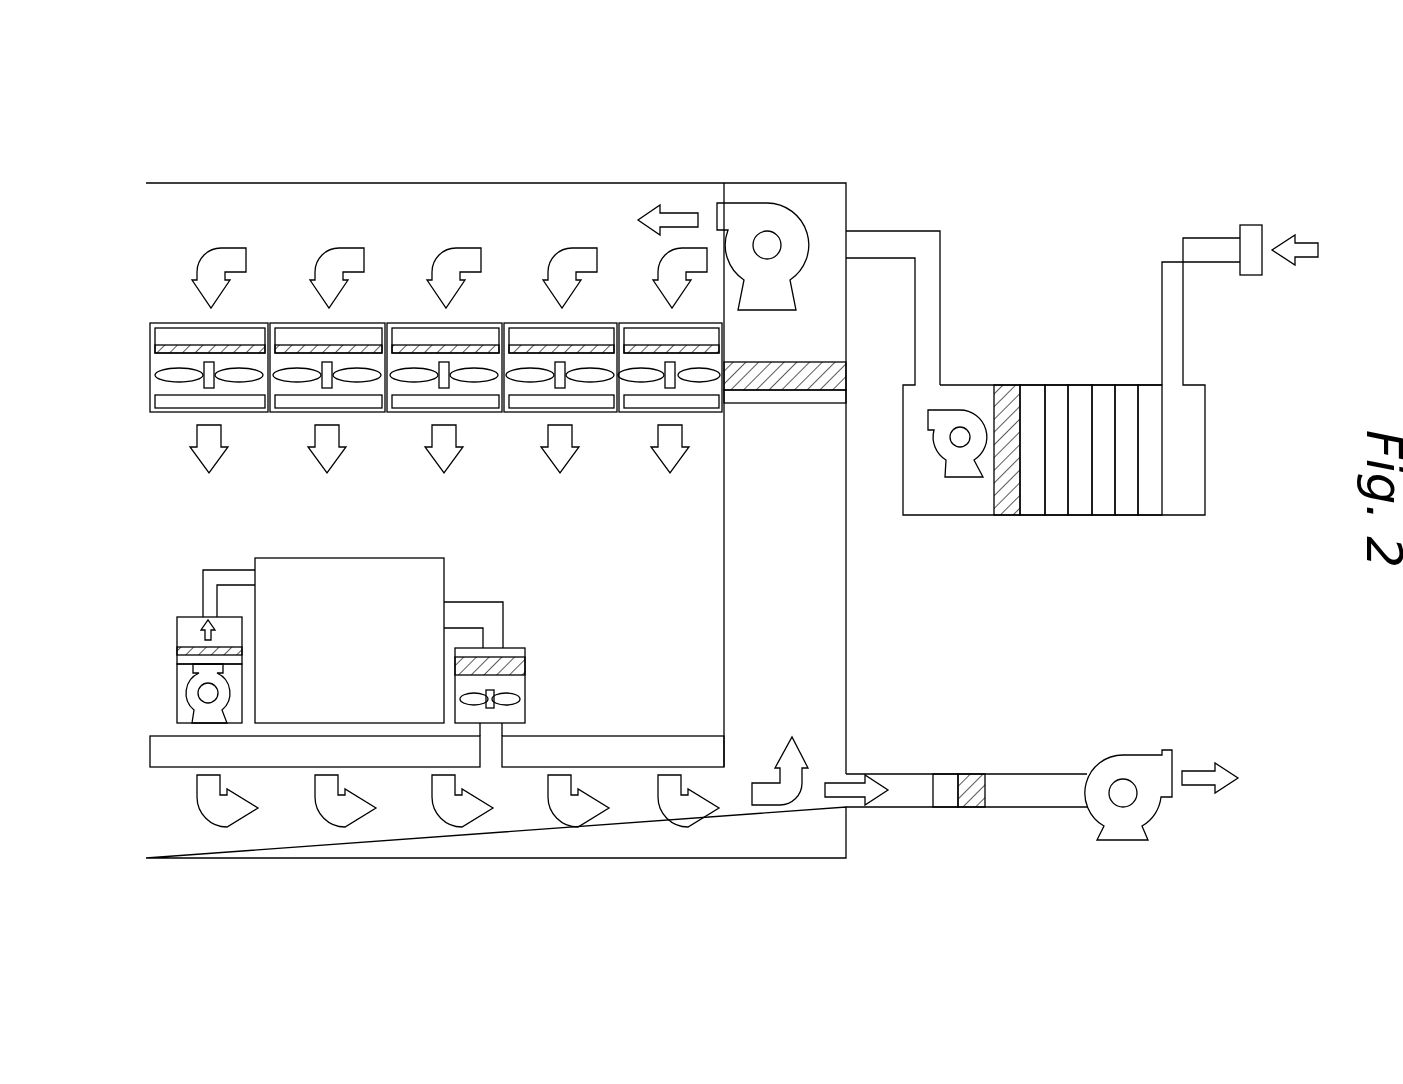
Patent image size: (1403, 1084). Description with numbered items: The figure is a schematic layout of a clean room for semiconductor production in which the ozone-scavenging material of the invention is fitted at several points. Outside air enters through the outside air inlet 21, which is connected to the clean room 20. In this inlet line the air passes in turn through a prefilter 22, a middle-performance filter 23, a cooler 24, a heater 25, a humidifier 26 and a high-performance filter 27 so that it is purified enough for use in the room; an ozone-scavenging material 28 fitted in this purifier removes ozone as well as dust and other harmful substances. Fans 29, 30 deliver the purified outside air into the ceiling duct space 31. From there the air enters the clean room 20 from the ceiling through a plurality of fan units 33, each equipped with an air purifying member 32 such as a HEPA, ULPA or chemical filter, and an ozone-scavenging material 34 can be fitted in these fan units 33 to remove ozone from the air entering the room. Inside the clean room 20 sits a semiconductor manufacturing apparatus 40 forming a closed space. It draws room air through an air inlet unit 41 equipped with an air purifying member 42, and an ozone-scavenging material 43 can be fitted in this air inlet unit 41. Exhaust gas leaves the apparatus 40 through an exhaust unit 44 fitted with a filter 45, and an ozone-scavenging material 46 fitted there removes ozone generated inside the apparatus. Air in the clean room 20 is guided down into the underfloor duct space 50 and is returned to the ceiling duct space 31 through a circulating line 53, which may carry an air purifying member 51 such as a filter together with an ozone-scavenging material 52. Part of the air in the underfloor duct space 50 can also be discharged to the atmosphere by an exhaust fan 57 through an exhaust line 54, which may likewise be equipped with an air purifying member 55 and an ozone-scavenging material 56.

The clean room 20 is at (496, 520).
The outside air inlet 21 is at (1252, 277).
The prefilter 22 is at (1146, 395).
The middle-performance filter 23 is at (1122, 400).
The cooler 24 is at (1107, 493).
The heater 25 is at (1077, 493).
The humidifier 26 is at (1057, 493).
The high-performance filter 27 is at (1032, 493).
The ozone-scavenging material 28 is at (998, 493).
The fan 29 is at (952, 473).
The fan 30 is at (768, 212).
The ceiling duct space 31 is at (512, 195).
The air purifying member 32 is at (160, 328).
The fan unit 33 is at (160, 370).
The ozone-scavenging material 34 is at (165, 350).
The semiconductor manufacturing apparatus 40 is at (398, 557).
The air inlet unit 41 is at (178, 692).
The air purifying member 42 is at (178, 660).
The ozone-scavenging material 43 is at (178, 640).
The exhaust unit 44 is at (528, 700).
The filter 45 is at (528, 648).
The ozone-scavenging material 46 is at (528, 668).
The underfloor duct space 50 is at (420, 838).
The air purifying member 51 is at (832, 397).
The ozone-scavenging material 52 is at (838, 377).
The circulating line 53 is at (828, 610).
The exhaust line 54 is at (918, 807).
The air purifying member 55 is at (945, 773).
The ozone-scavenging material 56 is at (975, 773).
The exhaust fan 57 is at (1130, 840).